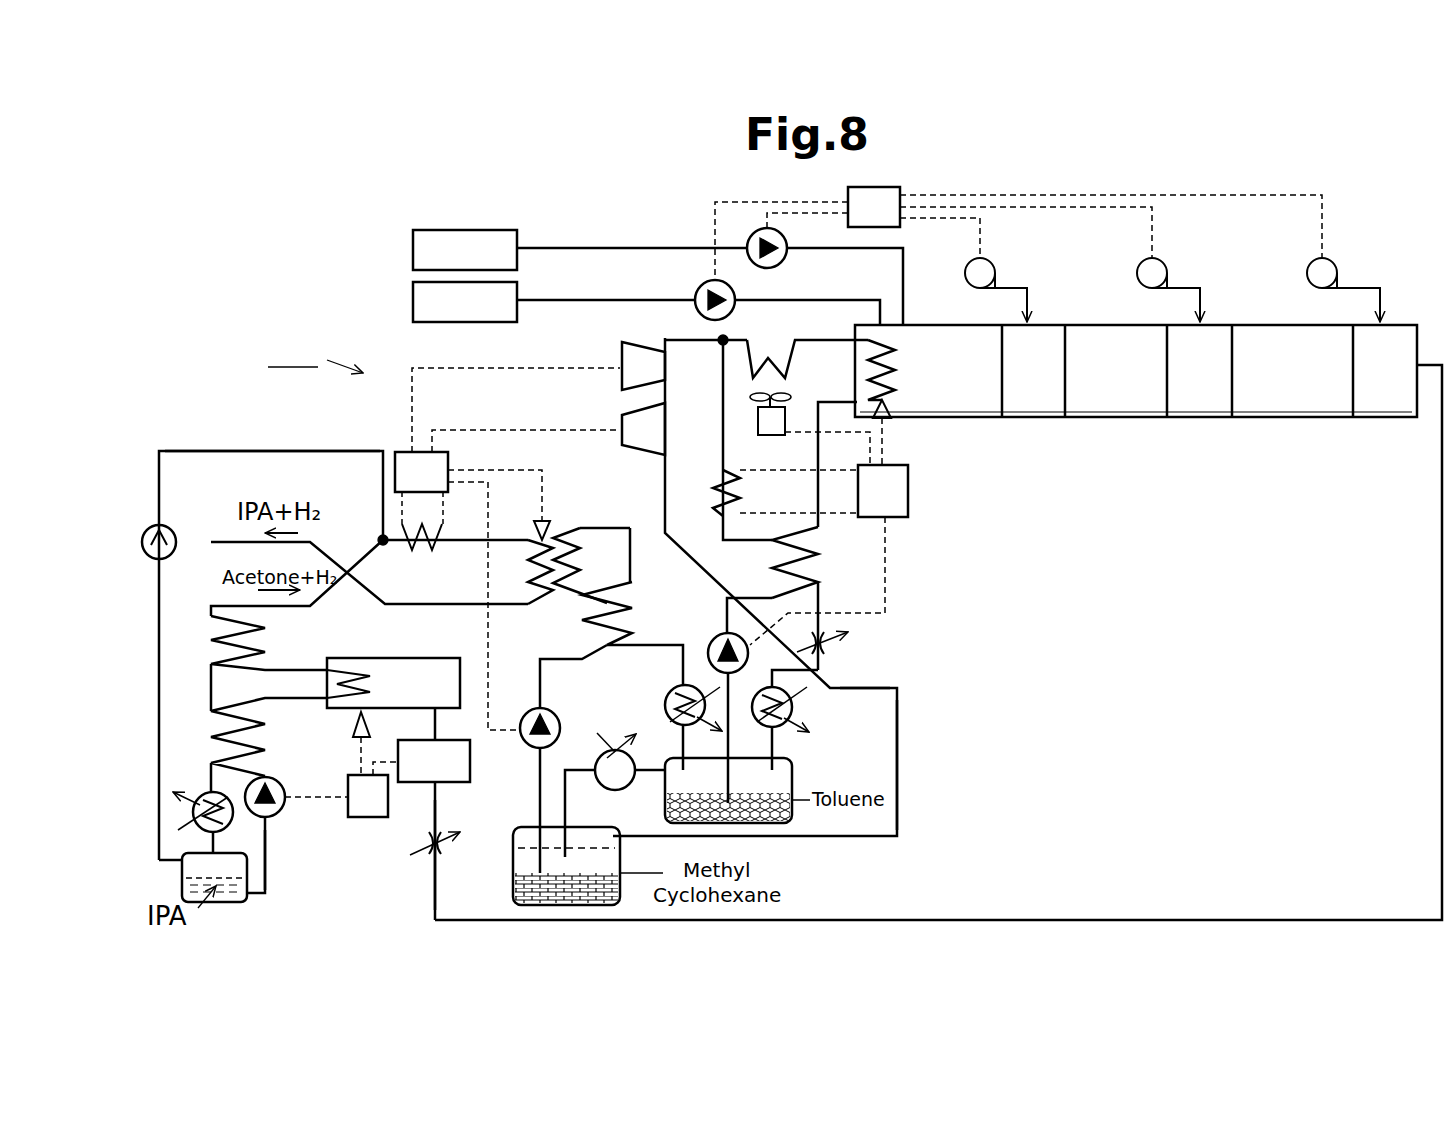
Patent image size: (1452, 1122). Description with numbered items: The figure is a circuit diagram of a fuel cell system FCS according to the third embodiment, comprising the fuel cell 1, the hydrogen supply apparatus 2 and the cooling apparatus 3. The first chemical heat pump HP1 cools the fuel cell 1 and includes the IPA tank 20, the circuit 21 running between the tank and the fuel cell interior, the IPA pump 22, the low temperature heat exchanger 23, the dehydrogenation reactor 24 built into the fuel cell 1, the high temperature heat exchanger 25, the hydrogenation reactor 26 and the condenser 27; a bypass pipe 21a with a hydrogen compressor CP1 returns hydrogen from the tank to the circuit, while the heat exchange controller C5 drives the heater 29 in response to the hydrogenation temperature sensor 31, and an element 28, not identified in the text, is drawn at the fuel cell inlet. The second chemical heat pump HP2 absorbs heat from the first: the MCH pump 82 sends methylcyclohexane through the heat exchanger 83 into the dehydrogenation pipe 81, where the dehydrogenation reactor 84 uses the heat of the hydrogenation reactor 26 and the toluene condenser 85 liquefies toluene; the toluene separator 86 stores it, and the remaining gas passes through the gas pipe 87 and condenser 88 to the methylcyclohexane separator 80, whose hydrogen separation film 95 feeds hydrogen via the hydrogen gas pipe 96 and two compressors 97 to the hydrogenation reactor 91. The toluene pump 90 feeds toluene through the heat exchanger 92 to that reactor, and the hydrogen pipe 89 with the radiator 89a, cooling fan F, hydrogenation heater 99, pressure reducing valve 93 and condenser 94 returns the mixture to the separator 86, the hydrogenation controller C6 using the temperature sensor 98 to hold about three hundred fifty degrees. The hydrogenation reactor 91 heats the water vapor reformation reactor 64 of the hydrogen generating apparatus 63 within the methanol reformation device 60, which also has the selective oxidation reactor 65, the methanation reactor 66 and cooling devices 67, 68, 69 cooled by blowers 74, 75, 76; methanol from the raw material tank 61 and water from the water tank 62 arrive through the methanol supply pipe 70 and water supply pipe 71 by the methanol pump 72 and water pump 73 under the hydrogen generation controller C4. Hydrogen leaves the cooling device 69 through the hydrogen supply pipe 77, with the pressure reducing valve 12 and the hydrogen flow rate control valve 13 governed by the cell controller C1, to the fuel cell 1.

The fuel cell 1 is at (420, 661).
The hydrogen supply apparatus 2 is at (1408, 292).
The cooling apparatus 3 is at (908, 677).
The pressure reducing valve 12 is at (427, 857).
The hydrogen flow rate control valve 13 is at (470, 770).
The IPA tank 20 is at (248, 902).
The circuit 21 is at (268, 828).
The bypass pipe 21a is at (222, 452).
The IPA pump 22 is at (285, 787).
The low temperature heat exchanger 23 is at (205, 725).
The dehydrogenation reactor 24 is at (352, 671).
The high temperature heat exchanger 25 is at (203, 633).
The hydrogenation reactor 26 is at (548, 605).
The condenser 27 is at (205, 790).
The valve 28 is at (352, 724).
The heater 29 is at (443, 551).
The hydrogenation temperature sensor 31 is at (536, 519).
The methanol reformation device 60 is at (1268, 452).
The raw material tank 61 is at (413, 250).
The water tank 62 is at (413, 302).
The hydrogen generating apparatus 63 is at (1113, 432).
The water vapor reformation reactor 64 is at (970, 417).
The selective oxidation reactor 65 is at (1147, 417).
The methanation reactor 66 is at (1310, 417).
The cooling device 67 is at (1027, 417).
The cooling device 68 is at (1198, 417).
The cooling device 69 is at (1385, 417).
The methanol supply pipe 70 is at (547, 248).
The water supply pipe 71 is at (547, 300).
The methanol pump 72 is at (782, 263).
The water pump 73 is at (730, 315).
The blower 74 is at (996, 266).
The blower 75 is at (1168, 266).
The blower 76 is at (1338, 266).
The hydrogen supply pipe 77 is at (1052, 918).
The methylcyclohexane separator 80 is at (452, 833).
The dehydrogenation pipe 81 is at (538, 690).
The MCH pump 82 is at (552, 712).
The heat exchanger 83 is at (637, 604).
The dehydrogenation reactor 84 is at (578, 527).
The toluene condenser 85 is at (666, 696).
The toluene separator 86 is at (795, 768).
The gas pipe 87 is at (566, 800).
The condenser 88 is at (615, 744).
The hydrogen pipe 89 is at (723, 394).
The radiator 89a is at (785, 378).
The toluene pump 90 is at (711, 644).
The hydrogenation reactor 91 is at (895, 345).
The heat exchanger 92 is at (826, 566).
The pressure reducing valve 93 is at (835, 648).
The condenser 94 is at (800, 707).
The hydrogen separation film 95 is at (523, 858).
The hydrogen gas pipe 96 is at (897, 770).
The compressors 97 is at (613, 398).
The hydrogenation temperature sensor 98 is at (893, 412).
The hydrogenation heater 99 is at (720, 472).
The cell controller C1 is at (366, 817).
The hydrogen generation controller C4 is at (852, 228).
The heat exchange controller C5 is at (398, 452).
The hydrogenation controller C6 is at (908, 493).
The hydrogen compressor CP1 is at (177, 540).
The first chemical heat pump HP1 is at (207, 448).
The second chemical heat pump HP2 is at (905, 581).
The cooling fan F is at (758, 428).
The fuel cell system FCS is at (315, 357).